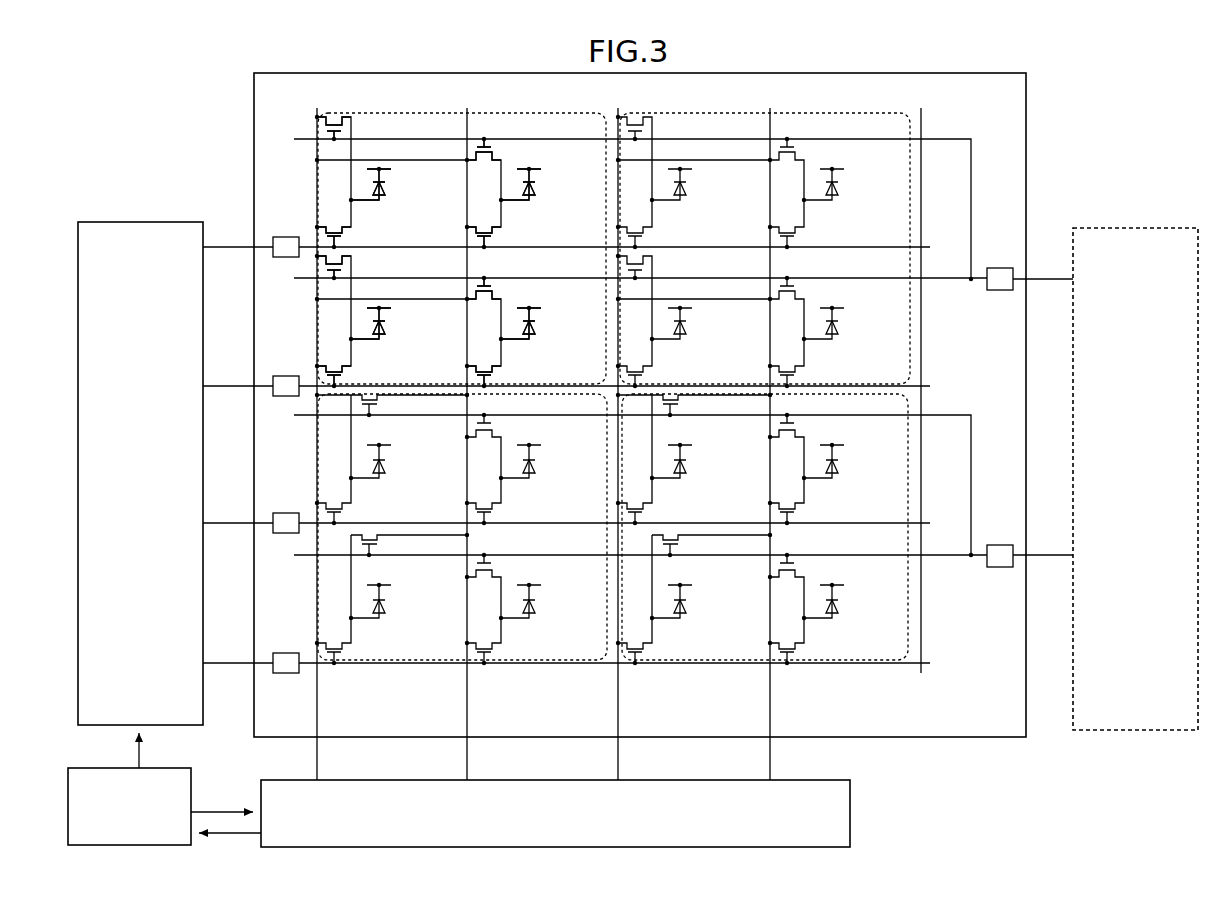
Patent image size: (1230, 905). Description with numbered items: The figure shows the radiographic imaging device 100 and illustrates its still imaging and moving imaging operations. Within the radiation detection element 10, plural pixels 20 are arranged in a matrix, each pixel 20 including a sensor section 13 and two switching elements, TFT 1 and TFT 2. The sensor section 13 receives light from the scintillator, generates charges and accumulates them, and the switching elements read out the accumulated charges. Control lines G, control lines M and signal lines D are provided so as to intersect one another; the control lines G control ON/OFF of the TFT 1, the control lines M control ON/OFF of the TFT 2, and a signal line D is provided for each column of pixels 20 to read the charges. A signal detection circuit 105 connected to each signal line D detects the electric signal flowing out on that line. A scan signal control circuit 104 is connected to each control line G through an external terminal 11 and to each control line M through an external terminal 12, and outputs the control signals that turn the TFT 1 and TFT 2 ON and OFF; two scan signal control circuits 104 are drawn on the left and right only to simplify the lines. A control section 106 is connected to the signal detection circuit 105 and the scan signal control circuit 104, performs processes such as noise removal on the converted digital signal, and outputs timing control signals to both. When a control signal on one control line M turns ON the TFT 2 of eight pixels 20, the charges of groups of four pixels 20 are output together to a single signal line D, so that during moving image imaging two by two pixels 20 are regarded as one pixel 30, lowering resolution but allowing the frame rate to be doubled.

The TFT 1 is at (354, 231).
The TFT 2 is at (341, 117).
The radiation detection element 10 is at (926, 73).
The external terminal 11 is at (288, 237).
The external terminal 12 is at (1000, 268).
The sensor section 13 is at (387, 188).
The pixel 20 is at (443, 103).
The pixel 30 is at (500, 113).
The radiographic imaging device 100 is at (1092, 82).
The scan signal control circuit 104 is at (100, 222).
The signal detection circuit 105 is at (850, 815).
The control section 106 is at (191, 777).